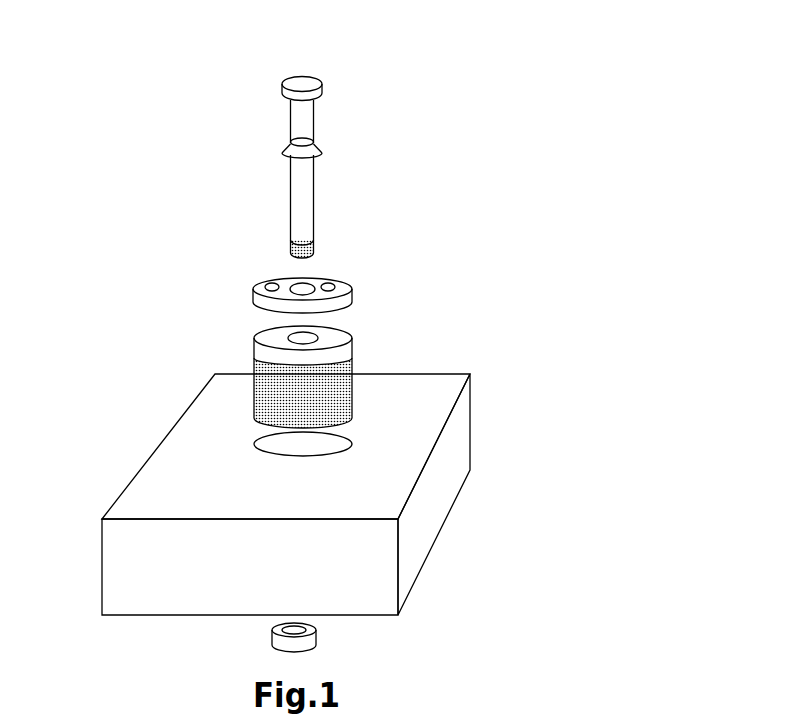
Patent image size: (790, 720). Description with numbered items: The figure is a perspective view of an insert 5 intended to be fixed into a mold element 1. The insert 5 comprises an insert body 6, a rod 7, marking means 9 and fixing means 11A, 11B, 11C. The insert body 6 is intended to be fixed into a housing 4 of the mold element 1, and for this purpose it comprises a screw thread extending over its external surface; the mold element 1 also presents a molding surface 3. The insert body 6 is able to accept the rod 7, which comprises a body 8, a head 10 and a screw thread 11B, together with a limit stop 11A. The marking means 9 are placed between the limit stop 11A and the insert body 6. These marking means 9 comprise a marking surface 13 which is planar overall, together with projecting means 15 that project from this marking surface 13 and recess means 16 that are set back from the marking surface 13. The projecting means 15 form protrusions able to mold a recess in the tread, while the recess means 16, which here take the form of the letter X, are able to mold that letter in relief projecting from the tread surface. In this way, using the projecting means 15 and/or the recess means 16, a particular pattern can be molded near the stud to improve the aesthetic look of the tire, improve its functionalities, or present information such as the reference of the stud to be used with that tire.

The mold element 1 is at (327, 333).
The molding surface 3 is at (253, 496).
The housing 4 is at (308, 452).
The insert 5 is at (335, 221).
The insert body 6 is at (356, 359).
The rod 7 is at (332, 180).
The body 8 is at (290, 136).
The marking means 9 is at (301, 259).
The head 10 is at (312, 90).
The limit stop 11A is at (287, 150).
The screw thread 11B is at (289, 252).
The fixing means 11C is at (320, 637).
The marking surface 13 is at (292, 292).
The projecting means 15 is at (331, 286).
The recess means 16 is at (266, 285).